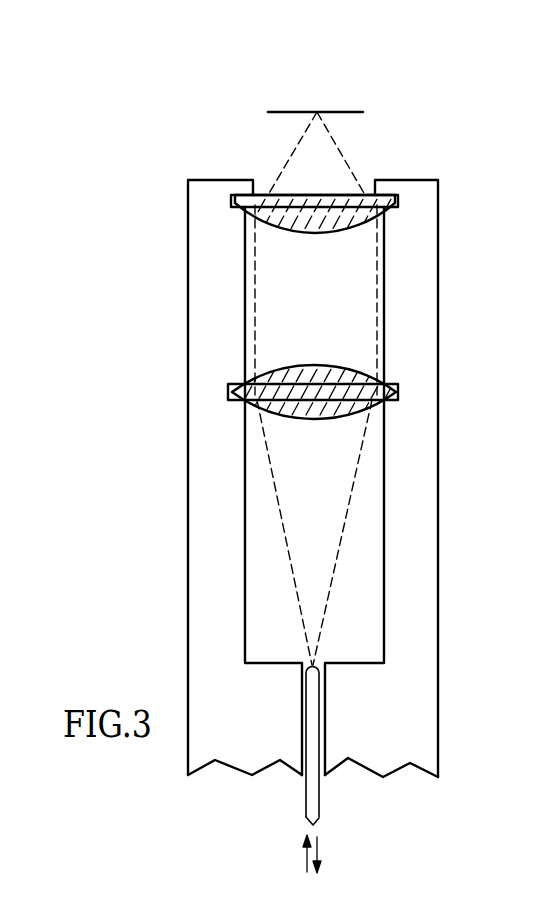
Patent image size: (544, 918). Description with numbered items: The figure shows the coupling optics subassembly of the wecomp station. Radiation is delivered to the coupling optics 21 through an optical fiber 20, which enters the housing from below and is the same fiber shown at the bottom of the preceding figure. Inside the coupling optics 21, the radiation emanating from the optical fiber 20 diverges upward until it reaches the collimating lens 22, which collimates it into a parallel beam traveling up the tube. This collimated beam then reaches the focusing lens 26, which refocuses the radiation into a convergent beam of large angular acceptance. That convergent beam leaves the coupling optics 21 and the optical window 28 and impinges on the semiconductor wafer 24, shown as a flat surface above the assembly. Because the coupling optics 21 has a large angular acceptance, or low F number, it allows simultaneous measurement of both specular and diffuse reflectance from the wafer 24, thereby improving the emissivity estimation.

The optical fiber 20 is at (306, 798).
The coupling optics 21 is at (163, 425).
The collimating lens 22 is at (342, 386).
The wafer 24 is at (345, 112).
The focusing lens 26 is at (343, 203).
The optical window 28 is at (302, 195).